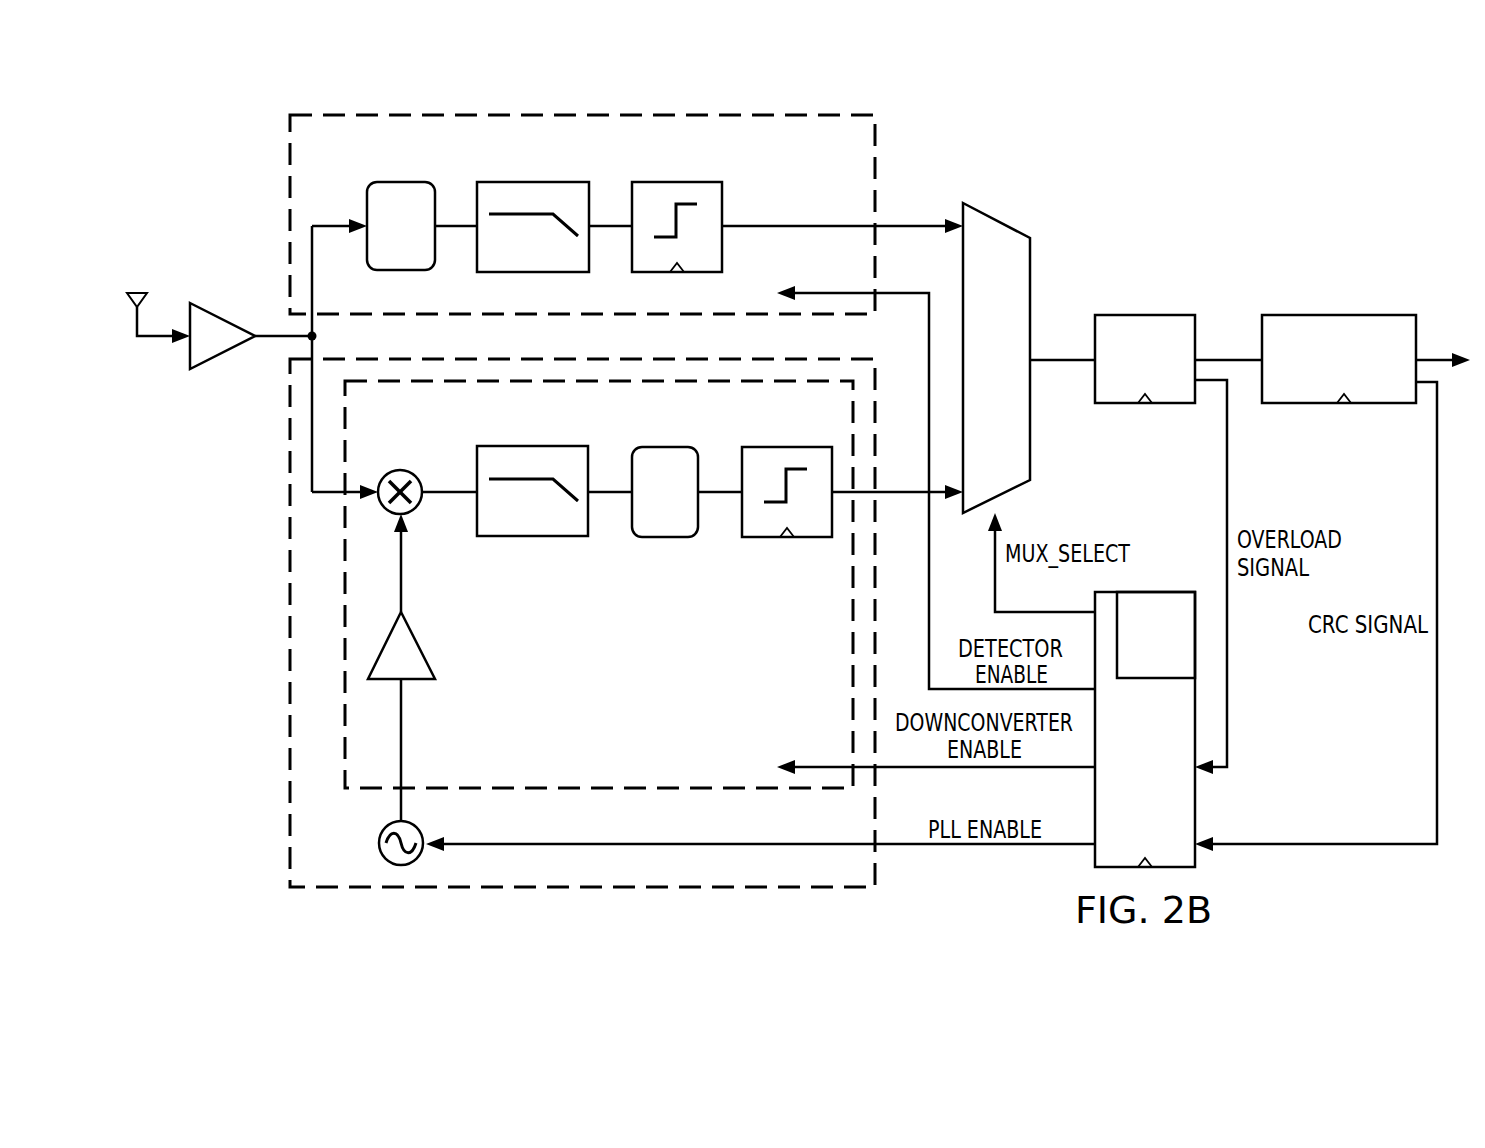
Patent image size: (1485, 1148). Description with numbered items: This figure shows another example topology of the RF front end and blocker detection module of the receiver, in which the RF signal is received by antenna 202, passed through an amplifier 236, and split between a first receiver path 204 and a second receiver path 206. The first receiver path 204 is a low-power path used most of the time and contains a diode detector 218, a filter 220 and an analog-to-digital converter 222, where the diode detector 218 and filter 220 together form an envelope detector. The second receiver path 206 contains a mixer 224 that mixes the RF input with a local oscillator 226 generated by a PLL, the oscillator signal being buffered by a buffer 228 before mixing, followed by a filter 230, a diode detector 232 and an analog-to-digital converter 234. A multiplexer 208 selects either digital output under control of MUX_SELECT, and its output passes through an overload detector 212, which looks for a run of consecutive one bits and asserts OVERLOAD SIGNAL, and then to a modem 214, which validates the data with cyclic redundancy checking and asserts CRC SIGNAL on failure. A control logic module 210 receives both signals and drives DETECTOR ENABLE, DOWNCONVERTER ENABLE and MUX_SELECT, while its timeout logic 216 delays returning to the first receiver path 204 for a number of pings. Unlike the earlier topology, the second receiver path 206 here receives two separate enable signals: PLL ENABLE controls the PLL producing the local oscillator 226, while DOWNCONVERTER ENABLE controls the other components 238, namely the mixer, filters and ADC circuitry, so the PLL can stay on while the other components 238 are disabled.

The antenna 202 is at (135, 291).
The first receiver path 204 is at (551, 110).
The second receiver path 206 is at (498, 894).
The multiplexer 208 is at (995, 218).
The control logic module 210 is at (1167, 777).
The overload detector 212 is at (1146, 314).
The modem 214 is at (1339, 314).
The timeout logic 216 is at (1161, 591).
The diode detector 218 is at (397, 181).
The filter 220 is at (530, 181).
The analog-to-digital converter 222 is at (673, 181).
The mixer 224 is at (388, 472).
The local oscillator 226 is at (378, 846).
The buffer 228 is at (419, 641).
The filter 230 is at (530, 445).
The diode detector 232 is at (660, 445).
The analog-to-digital converter 234 is at (770, 445).
The low noise amplifier 236 is at (224, 320).
The other components 238 is at (648, 680).